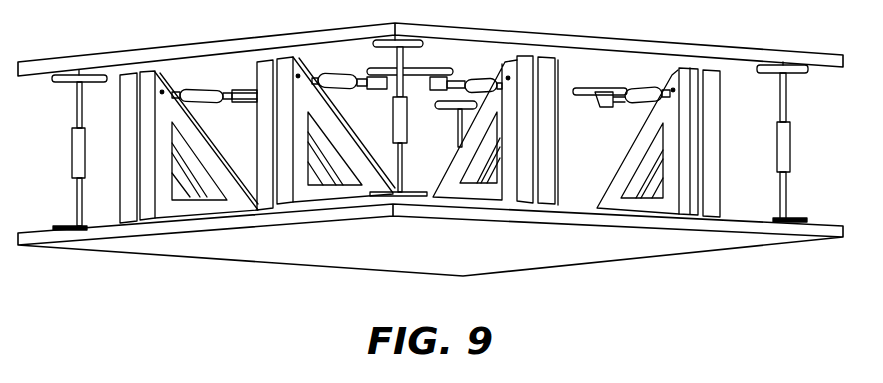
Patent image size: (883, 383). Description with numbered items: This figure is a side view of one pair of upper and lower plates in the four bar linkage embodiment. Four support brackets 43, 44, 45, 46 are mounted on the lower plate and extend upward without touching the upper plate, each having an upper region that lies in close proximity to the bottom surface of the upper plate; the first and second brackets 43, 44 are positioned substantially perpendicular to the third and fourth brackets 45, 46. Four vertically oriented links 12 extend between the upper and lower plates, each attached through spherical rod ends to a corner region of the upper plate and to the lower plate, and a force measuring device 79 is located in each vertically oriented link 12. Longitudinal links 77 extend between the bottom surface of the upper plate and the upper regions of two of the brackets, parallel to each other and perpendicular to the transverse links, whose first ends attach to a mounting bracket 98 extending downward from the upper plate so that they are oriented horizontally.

The vertically oriented link 12 is at (73, 103).
The support bracket 43 is at (133, 197).
The support bracket 44 is at (263, 130).
The support bracket 45 is at (547, 145).
The support bracket 46 is at (712, 188).
The longitudinal link 77 is at (377, 88).
The force measuring device 79 is at (632, 103).
The mounting bracket 98 is at (600, 98).